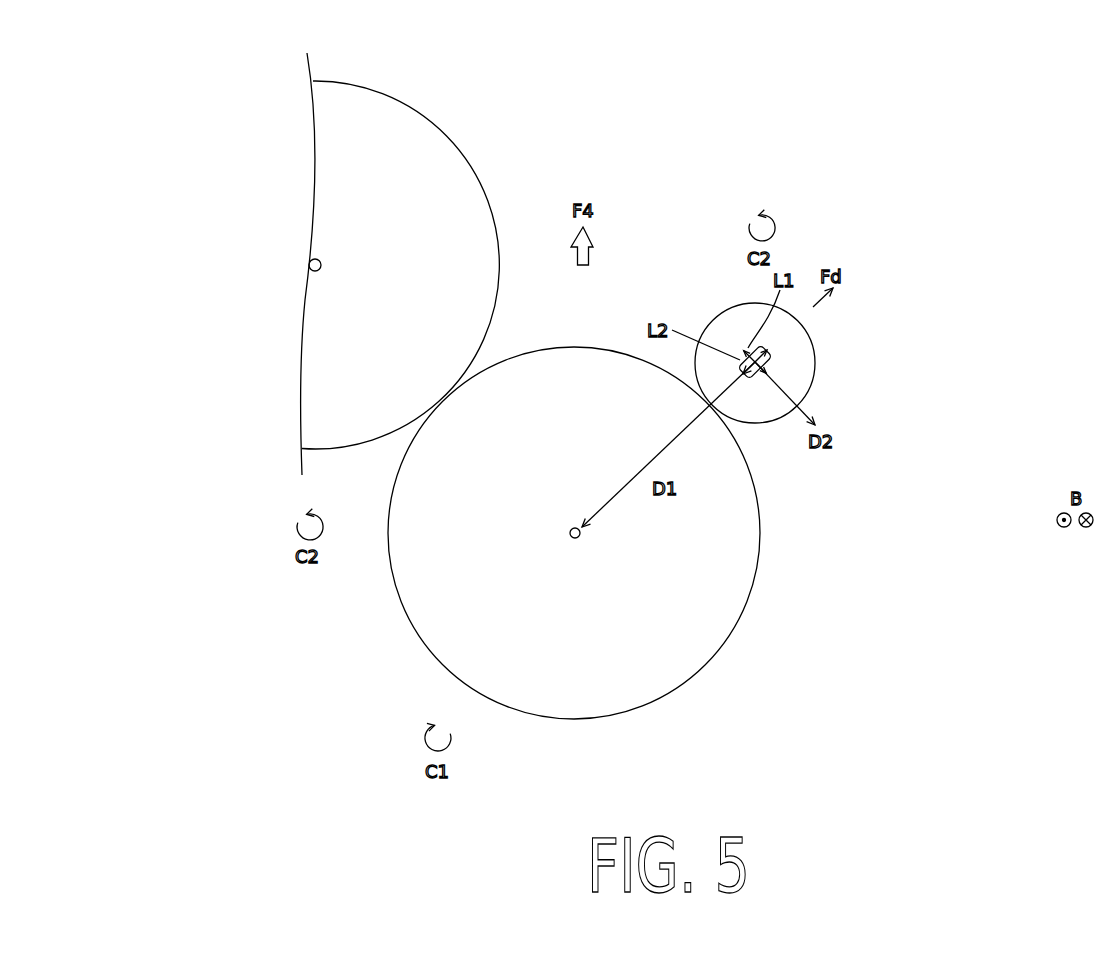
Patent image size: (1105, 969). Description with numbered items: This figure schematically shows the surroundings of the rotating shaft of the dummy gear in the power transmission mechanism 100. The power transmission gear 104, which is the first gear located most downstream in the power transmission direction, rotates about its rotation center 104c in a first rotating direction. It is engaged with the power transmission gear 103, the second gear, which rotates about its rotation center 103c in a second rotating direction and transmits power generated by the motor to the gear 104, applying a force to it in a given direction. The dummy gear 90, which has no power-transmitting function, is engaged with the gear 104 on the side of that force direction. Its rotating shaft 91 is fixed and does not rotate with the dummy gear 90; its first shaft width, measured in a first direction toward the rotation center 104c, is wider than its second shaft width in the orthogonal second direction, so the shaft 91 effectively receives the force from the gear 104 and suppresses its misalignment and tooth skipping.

The power transmission gear 103 is at (443, 137).
The rotation center of power transmission gear 103c is at (309, 265).
The power transmission gear 104 is at (733, 628).
The rotation center of power transmission gear 104c is at (575, 541).
The dummy gear 90 is at (810, 340).
The rotating shaft 91 is at (770, 352).
The power transmission mechanism 100 is at (948, 222).